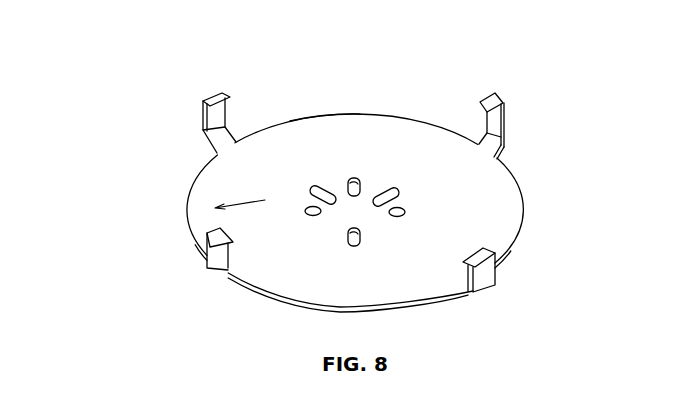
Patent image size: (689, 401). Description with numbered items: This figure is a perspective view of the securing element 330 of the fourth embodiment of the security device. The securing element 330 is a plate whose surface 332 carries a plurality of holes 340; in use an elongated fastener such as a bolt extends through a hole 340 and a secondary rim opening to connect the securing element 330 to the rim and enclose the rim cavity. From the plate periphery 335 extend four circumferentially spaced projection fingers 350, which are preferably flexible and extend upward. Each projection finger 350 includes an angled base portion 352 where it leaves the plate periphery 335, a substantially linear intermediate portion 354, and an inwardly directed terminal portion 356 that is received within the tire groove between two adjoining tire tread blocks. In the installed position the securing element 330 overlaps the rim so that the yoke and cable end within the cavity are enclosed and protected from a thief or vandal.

The securing element 330 is at (502, 200).
The top surface of plate 332 is at (239, 193).
The plate periphery 335 is at (325, 112).
The hole 340 is at (325, 185).
The projection finger 350 is at (232, 103).
The angled base portion 352 is at (500, 152).
The intermediate portion 354 is at (505, 108).
The terminal portion 356 is at (492, 98).